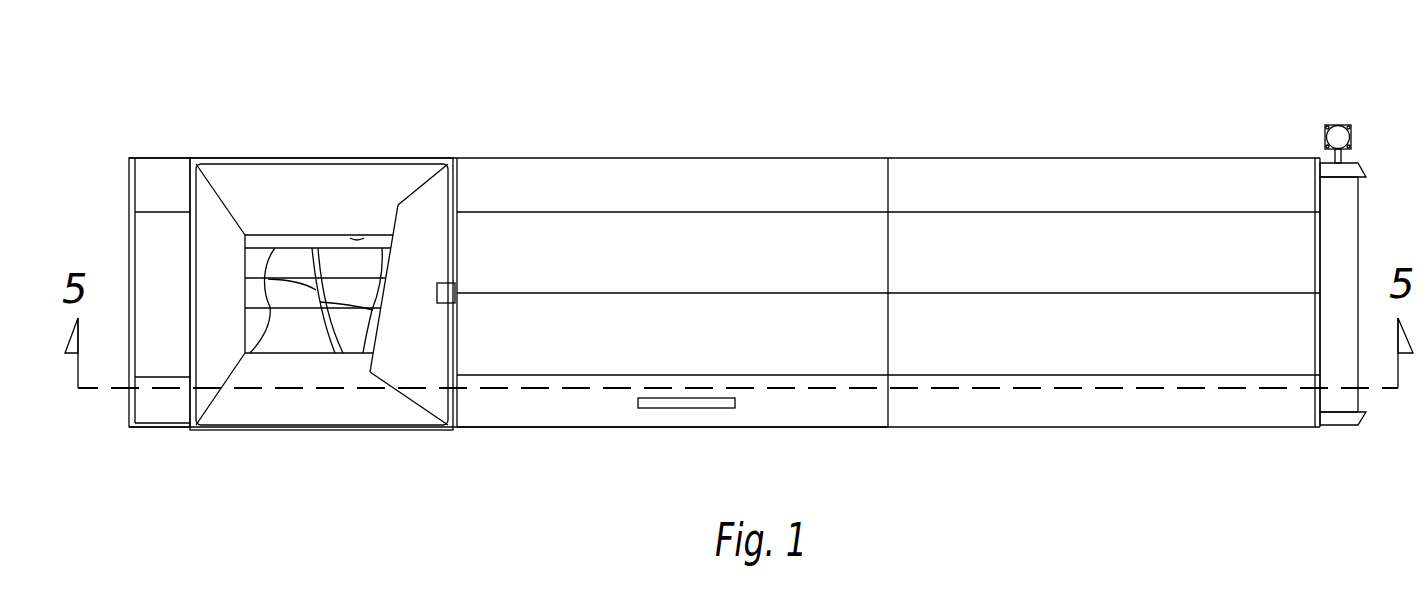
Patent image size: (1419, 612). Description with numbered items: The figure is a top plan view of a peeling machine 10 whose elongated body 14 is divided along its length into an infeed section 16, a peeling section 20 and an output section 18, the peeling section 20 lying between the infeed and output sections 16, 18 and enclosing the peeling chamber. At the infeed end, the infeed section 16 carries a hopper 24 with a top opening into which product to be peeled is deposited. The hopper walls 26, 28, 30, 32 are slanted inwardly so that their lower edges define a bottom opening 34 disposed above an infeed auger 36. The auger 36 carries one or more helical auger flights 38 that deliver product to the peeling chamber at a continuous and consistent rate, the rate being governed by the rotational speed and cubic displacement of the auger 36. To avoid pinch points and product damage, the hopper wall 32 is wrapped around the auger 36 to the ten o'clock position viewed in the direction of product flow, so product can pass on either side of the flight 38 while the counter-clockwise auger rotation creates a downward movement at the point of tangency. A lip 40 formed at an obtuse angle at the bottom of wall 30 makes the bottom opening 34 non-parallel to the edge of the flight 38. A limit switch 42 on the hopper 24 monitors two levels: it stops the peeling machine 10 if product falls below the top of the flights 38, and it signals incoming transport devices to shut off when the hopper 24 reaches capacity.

The peeling machine 10 is at (805, 60).
The elongated body 14 is at (604, 123).
The infeed section 16 is at (140, 121).
The output section 18 is at (1144, 457).
The peeling section 20 is at (570, 456).
The hopper 24 is at (233, 121).
The hopper wall 26 is at (325, 395).
The hopper wall 28 is at (208, 250).
The hopper wall 30 is at (332, 185).
The hopper wall 32 is at (430, 258).
The bottom opening 34 is at (353, 237).
The infeed auger 36 is at (232, 320).
The helical auger flight 38 is at (360, 318).
The lip 40 is at (295, 238).
The limit switch 42 is at (457, 290).